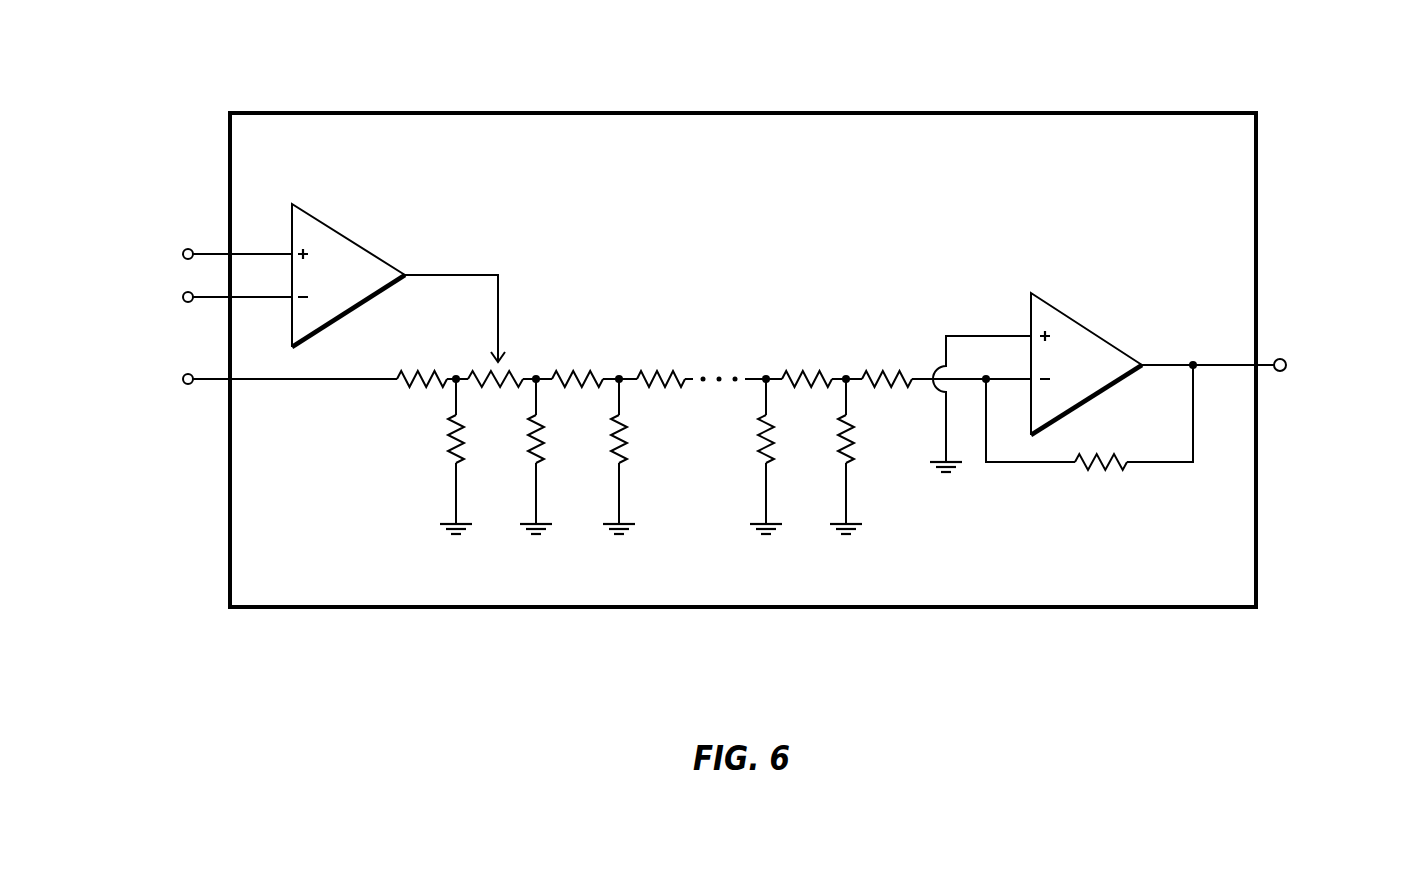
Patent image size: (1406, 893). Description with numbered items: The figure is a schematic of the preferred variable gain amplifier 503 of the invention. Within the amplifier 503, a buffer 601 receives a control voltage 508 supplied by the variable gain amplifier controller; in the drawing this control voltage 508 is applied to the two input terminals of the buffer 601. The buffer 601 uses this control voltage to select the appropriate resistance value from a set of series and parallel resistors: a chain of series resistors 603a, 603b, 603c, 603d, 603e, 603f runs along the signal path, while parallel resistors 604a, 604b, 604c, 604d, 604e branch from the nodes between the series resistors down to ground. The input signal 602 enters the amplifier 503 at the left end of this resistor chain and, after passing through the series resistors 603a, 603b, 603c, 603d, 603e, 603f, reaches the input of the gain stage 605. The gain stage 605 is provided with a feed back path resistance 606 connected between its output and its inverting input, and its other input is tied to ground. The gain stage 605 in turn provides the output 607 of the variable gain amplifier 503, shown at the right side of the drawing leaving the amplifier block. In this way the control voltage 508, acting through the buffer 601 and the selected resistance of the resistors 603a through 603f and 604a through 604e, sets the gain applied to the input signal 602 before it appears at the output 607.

The variable gain amplifier 503 is at (958, 112).
The control voltage 508 is at (178, 271).
The buffer 601 is at (352, 245).
The input signal 602 is at (178, 380).
The series resistor 603a is at (425, 374).
The series resistor 603b is at (512, 370).
The series resistor 603c is at (580, 371).
The series resistor 603d is at (650, 365).
The series resistor 603e is at (805, 371).
The series resistor 603f is at (885, 371).
The parallel resistor 604a is at (452, 438).
The parallel resistor 604b is at (536, 463).
The parallel resistor 604c is at (619, 463).
The parallel resistor 604d is at (762, 438).
The parallel resistor 604e is at (846, 463).
The gain stage 605 is at (1083, 330).
The feed back path resistance 606 is at (1101, 471).
The output 607 is at (1290, 365).